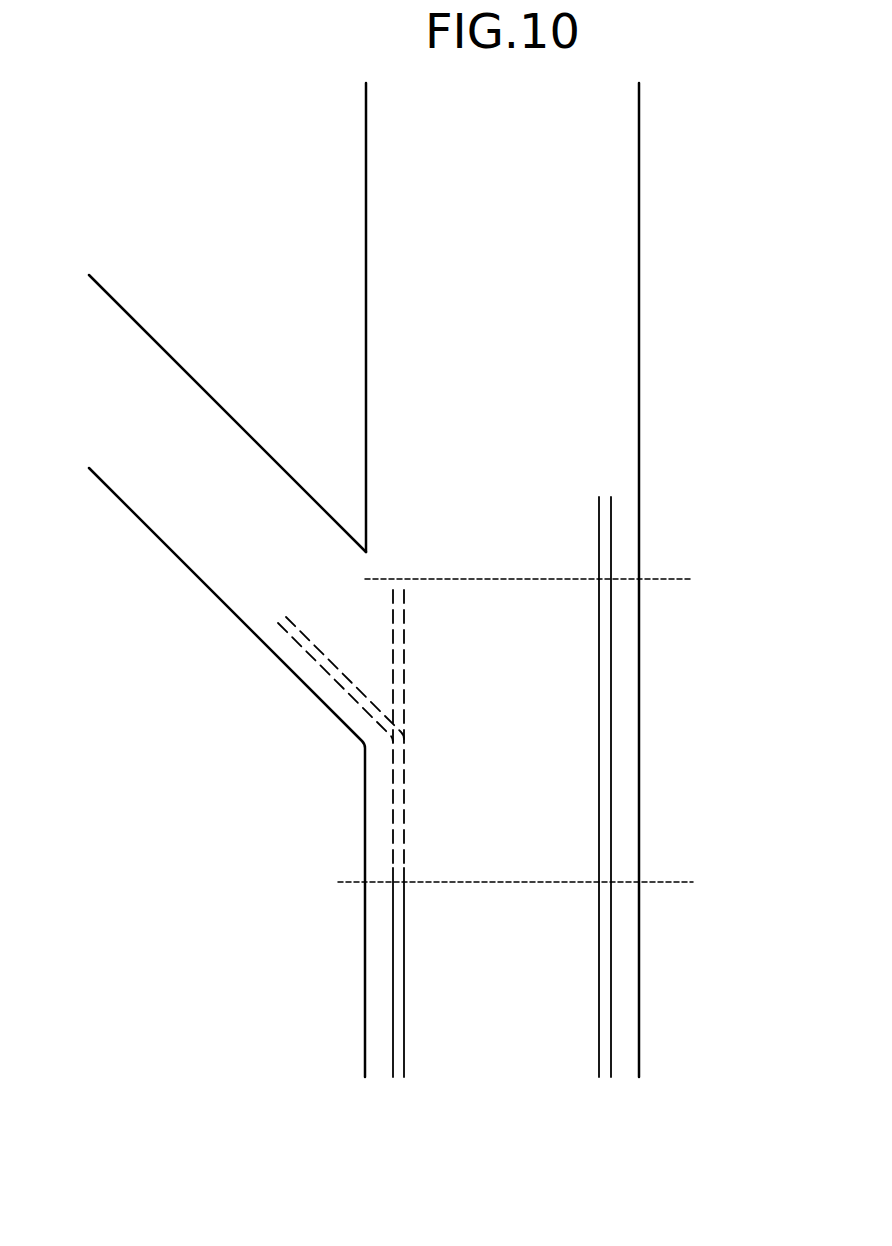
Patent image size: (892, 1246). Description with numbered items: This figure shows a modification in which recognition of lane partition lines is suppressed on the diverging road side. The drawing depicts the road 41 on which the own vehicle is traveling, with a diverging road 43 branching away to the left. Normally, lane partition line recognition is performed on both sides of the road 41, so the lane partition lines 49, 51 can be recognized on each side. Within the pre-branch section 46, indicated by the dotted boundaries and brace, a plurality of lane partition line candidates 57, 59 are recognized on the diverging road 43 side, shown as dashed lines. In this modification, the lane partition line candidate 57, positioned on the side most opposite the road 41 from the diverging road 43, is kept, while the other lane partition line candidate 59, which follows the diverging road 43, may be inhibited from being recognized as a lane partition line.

The road 41 is at (557, 278).
The diverging road 43 is at (235, 457).
The pre-branch section 46 is at (707, 579).
The lane partition line 49 is at (398, 966).
The lane partition line 51 is at (603, 967).
The lane partition line candidate 57 is at (397, 677).
The lane partition line candidate 59 is at (310, 648).